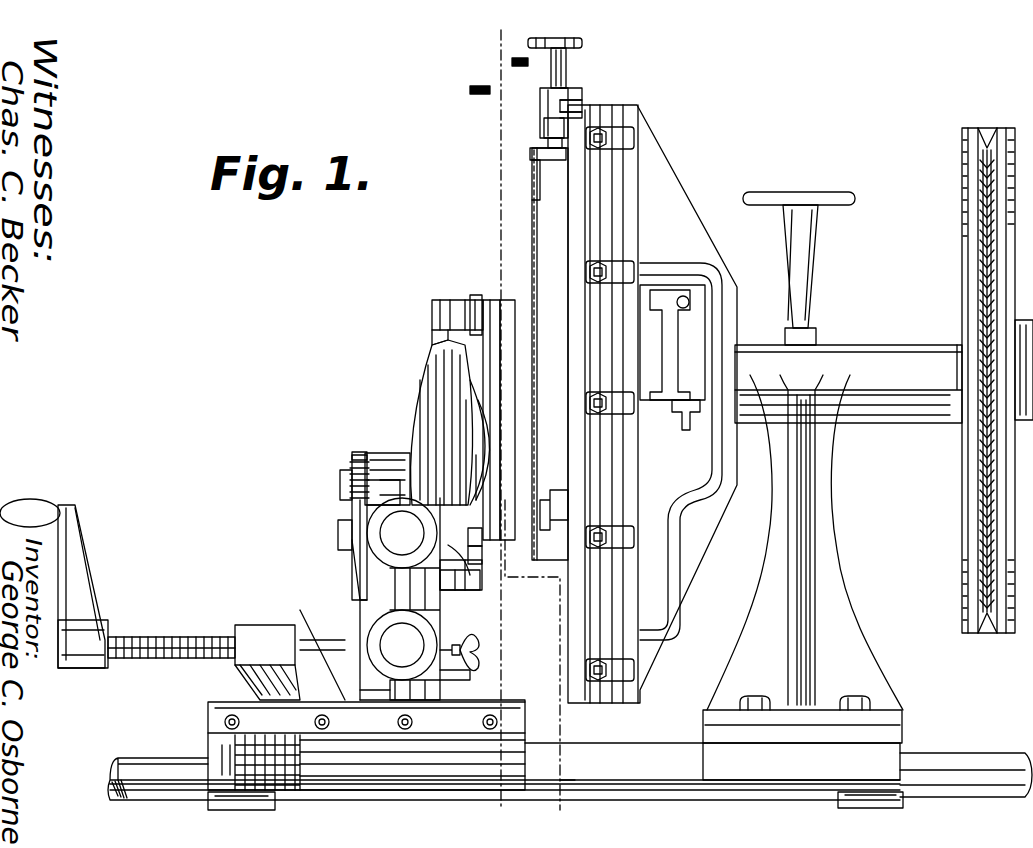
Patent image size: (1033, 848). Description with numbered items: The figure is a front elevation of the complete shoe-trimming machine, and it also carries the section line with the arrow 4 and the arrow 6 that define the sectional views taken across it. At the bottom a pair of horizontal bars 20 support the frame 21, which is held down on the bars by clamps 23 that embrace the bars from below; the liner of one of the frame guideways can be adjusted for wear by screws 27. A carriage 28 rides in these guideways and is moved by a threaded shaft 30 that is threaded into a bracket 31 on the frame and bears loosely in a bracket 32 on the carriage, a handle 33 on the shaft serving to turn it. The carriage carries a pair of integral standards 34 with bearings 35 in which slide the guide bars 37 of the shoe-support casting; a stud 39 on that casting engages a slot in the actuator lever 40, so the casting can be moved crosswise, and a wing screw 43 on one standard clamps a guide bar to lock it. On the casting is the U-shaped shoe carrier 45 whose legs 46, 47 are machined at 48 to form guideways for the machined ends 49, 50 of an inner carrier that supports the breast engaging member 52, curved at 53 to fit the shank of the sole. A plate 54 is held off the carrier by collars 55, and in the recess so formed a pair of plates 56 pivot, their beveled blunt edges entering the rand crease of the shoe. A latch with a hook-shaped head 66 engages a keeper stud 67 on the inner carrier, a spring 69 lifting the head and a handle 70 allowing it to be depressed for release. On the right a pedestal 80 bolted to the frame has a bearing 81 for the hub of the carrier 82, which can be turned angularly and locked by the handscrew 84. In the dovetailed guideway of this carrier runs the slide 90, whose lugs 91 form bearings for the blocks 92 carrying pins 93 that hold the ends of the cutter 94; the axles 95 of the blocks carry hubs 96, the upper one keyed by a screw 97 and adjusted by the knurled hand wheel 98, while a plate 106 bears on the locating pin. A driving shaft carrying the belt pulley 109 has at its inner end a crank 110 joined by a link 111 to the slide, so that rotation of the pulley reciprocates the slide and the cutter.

The section line / arrow 4 is at (503, 62).
The direction arrow 6 is at (492, 94).
The horizontally extending bars 20 is at (950, 768).
The frame 21 is at (504, 771).
The clamps 23 is at (850, 800).
The screws 27 is at (228, 727).
The carriage 28 is at (440, 687).
The threaded shaft 30 is at (170, 640).
The bracket 31 is at (262, 630).
The bracket 32 is at (355, 640).
The handle 33 is at (20, 505).
The standards 34 is at (385, 596).
The bearings 35 is at (370, 540).
The guide bars 37 is at (442, 600).
The stud 39 is at (338, 535).
The actuator lever 40 is at (360, 572).
The wing screw 43 is at (478, 656).
The shoe carrier member 45 is at (425, 430).
The leg of carrier 46 is at (445, 345).
The leg of carrier 47 is at (470, 575).
The machined guideways 48 is at (458, 300).
The machined end of carrier 49 is at (480, 330).
The machined end of carrier 50 is at (465, 590).
The breast engaging member 52 is at (478, 345).
The curved portion 53 is at (470, 480).
The plate 54 is at (475, 540).
The collars 55 is at (478, 555).
The plates 56 is at (480, 430).
The latch head 66 is at (400, 465).
The keeper stud 67 is at (352, 468).
The spring 69 is at (355, 458).
The latch handle 70 is at (365, 498).
The pedestal 80 is at (835, 600).
The bearing 81 is at (850, 345).
The carrier 82 is at (680, 210).
The handscrew 84 is at (810, 285).
The slide 90 is at (578, 330).
The lugs 91 is at (548, 120).
The blocks 92 is at (534, 164).
The pins 93 is at (534, 150).
The cutter 94 is at (532, 216).
The bearing axles 95 is at (590, 108).
The hubs 96 is at (580, 98).
The screw 97 is at (545, 100).
The knurled hand wheel 98 is at (566, 60).
The plate 106 is at (582, 90).
The belt pulley 109 is at (972, 475).
The crank 110 is at (685, 350).
The link 111 is at (663, 345).